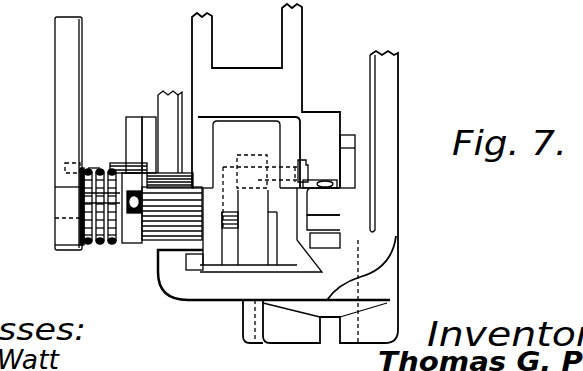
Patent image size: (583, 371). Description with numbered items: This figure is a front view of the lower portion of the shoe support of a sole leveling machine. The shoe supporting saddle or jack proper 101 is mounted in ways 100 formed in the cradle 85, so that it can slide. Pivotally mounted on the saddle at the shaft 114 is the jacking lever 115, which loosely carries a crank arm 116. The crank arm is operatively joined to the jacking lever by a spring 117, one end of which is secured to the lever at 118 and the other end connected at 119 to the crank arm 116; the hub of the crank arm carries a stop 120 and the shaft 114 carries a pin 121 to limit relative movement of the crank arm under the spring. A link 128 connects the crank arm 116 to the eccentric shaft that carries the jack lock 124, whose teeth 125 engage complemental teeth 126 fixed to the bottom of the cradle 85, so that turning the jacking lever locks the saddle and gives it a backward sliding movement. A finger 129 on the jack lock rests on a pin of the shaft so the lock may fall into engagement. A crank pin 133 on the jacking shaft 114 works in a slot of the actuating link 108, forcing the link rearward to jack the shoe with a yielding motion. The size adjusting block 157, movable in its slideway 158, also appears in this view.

The cradle 85 is at (177, 93).
The ways 100 is at (200, 255).
The shoe supporting saddle or jack proper 101 is at (192, 262).
The actuating link 108 is at (252, 250).
The shaft 114 is at (58, 201).
The jacking lever 115 is at (55, 57).
The crank arm 116 is at (133, 117).
The spring 117 is at (95, 165).
The spring attachment point on jacking lever 118 is at (65, 168).
The spring connection to crank arm 119 is at (123, 163).
The stop 120 is at (104, 250).
The pin 121 is at (83, 202).
The jack lock 124 is at (328, 207).
The teeth 125 is at (328, 222).
The complemental teeth 126 is at (328, 243).
The link 128 is at (148, 117).
The finger 129 is at (303, 160).
The crank pin 133 is at (275, 146).
The block 157 is at (350, 148).
The slideway 158 is at (362, 162).